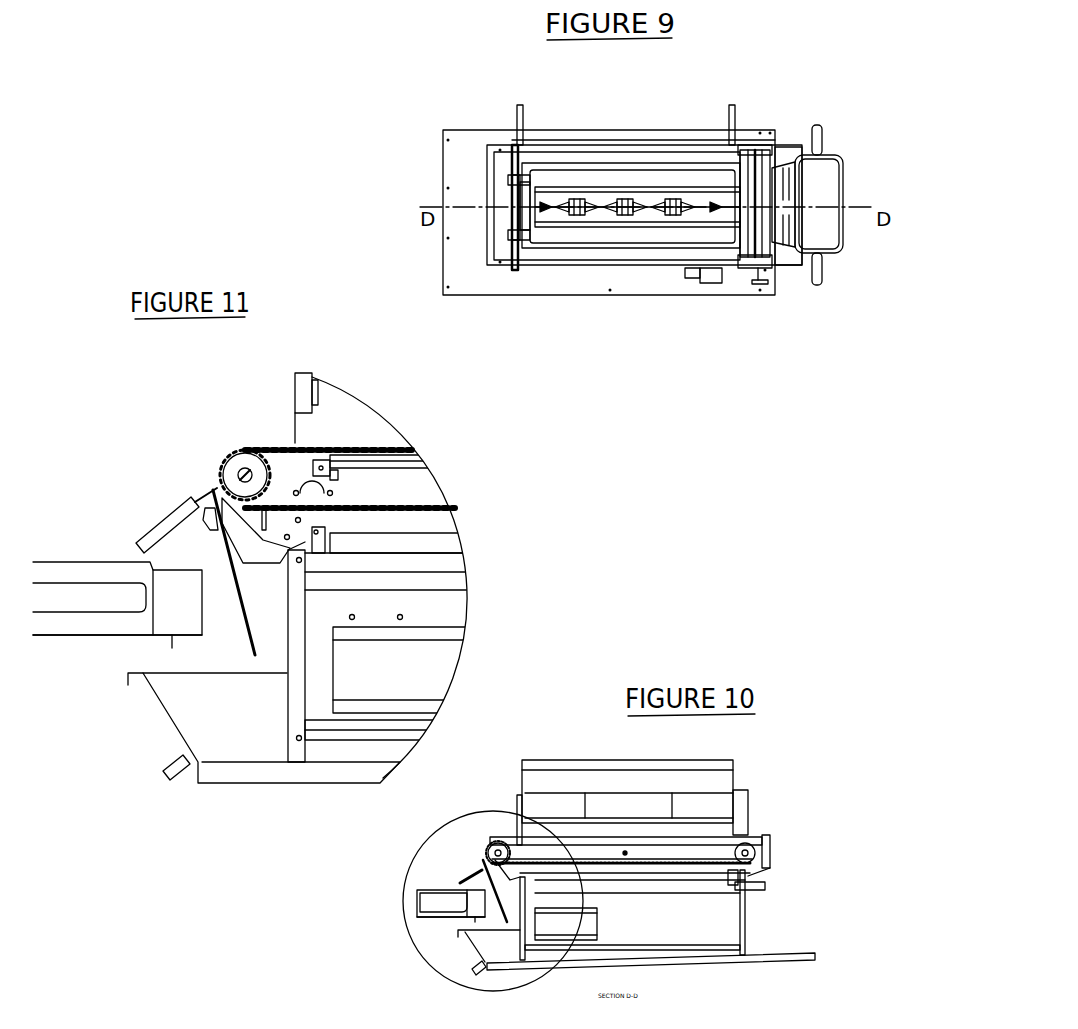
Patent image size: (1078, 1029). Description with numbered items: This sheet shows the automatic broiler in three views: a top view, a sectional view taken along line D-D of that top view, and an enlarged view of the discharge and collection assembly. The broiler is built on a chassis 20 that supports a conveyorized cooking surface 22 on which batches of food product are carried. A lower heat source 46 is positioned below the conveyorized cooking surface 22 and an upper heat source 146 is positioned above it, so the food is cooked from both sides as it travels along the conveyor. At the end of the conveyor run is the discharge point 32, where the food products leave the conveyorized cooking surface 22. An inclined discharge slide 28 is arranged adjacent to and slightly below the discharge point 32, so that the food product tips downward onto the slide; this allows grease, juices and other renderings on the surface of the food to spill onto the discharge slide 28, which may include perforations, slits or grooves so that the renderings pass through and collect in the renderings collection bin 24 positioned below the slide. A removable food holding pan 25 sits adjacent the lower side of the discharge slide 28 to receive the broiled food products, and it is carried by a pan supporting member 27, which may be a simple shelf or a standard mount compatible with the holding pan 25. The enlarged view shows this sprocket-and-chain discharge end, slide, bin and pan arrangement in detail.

In FIG. 11, the chassis 20 is at (288, 427).
In FIG. 10, the conveyorized cooking surface 22 is at (742, 840).
In FIG. 11, the conveyorized cooking surface 22 is at (282, 447).
In FIG. 10, the renderings collection bin 24 is at (463, 940).
In FIG. 11, the renderings collection bin 24 is at (180, 722).
In FIG. 9, the food holding pan 25 is at (828, 178).
In FIG. 10, the food holding pan 25 is at (433, 890).
In FIG. 11, the food holding pan 25 is at (80, 562).
In FIG. 10, the pan supporting member 27 is at (418, 925).
In FIG. 11, the pan supporting member 27 is at (90, 635).
In FIG. 11, the discharge slide 28 is at (205, 493).
In FIG. 10, the discharge point 32 is at (484, 847).
In FIG. 11, the discharge point 32 is at (213, 447).
In FIG. 10, the lower heat source 46 is at (710, 890).
In FIG. 10, the upper heat source 146 is at (707, 807).